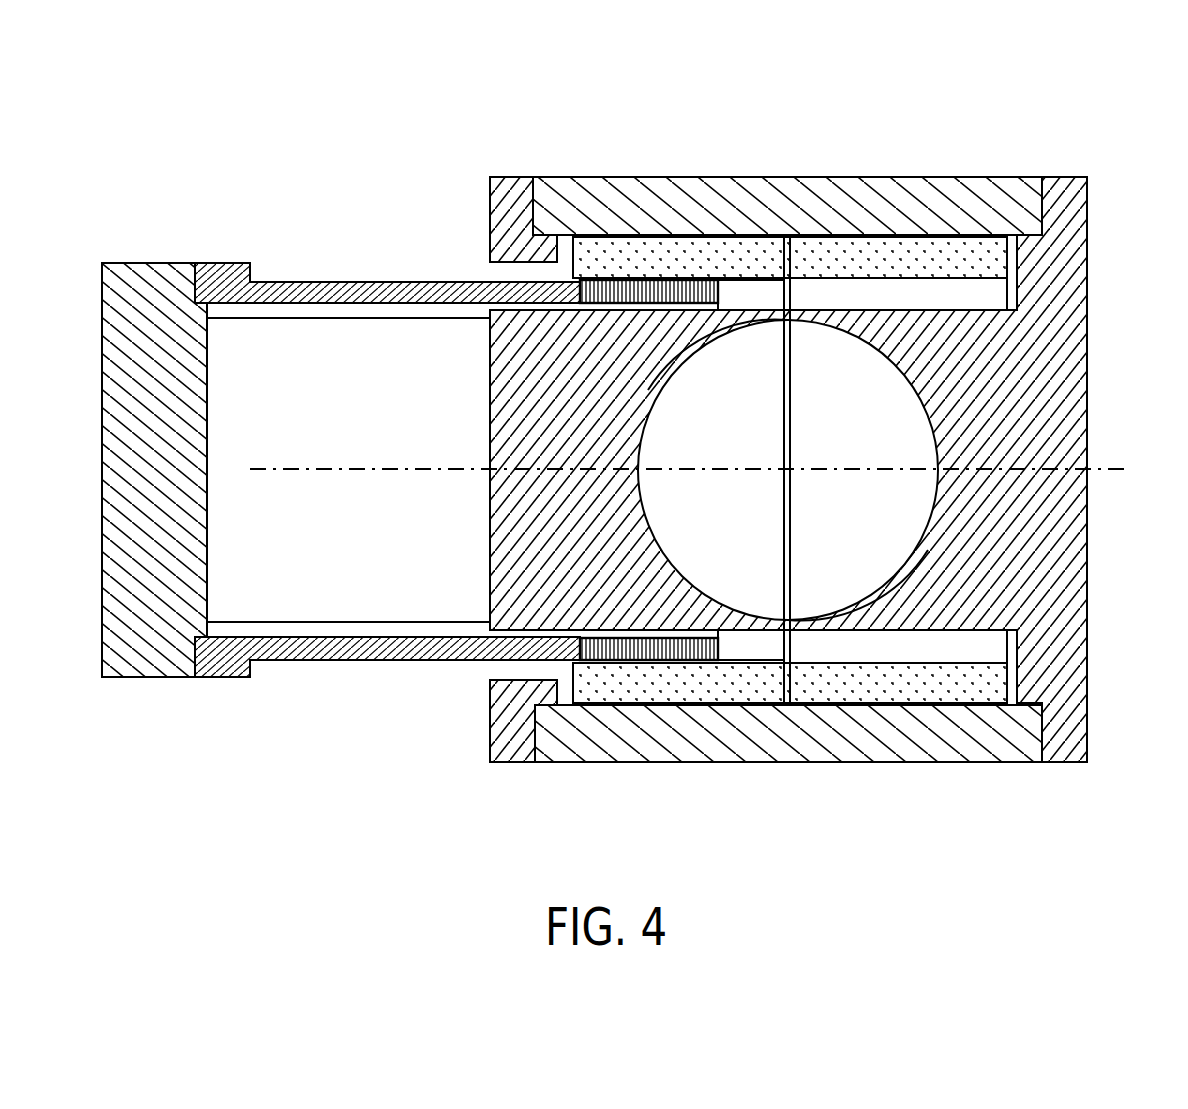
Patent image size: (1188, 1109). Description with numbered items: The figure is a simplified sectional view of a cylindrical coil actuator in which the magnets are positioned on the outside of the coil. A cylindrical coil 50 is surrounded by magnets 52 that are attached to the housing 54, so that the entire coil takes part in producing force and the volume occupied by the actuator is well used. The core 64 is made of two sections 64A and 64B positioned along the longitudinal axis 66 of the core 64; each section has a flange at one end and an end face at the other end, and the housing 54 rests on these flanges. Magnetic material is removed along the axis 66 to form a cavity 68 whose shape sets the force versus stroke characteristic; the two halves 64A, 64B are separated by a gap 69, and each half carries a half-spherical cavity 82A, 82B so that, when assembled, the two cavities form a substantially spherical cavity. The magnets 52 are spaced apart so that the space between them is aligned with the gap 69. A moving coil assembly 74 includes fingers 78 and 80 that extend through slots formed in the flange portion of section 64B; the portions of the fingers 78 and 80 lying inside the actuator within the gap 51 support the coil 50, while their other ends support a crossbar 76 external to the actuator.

The cylindrical coil 50 is at (605, 285).
The gap 51 is at (751, 295).
The magnets 52 is at (641, 255).
The housing 54 is at (848, 215).
The core 64 is at (1060, 361).
The core section 64A is at (1087, 577).
The core section 64B is at (488, 527).
The longitudinal axis 66 is at (392, 467).
The cavity 68 is at (836, 440).
The gap 69 is at (793, 480).
The moving coil assembly 74 is at (341, 480).
The crossbar 76 is at (207, 362).
The finger 78 is at (392, 292).
The finger 80 is at (345, 648).
The half-spherical cavity 82A is at (883, 585).
The half-spherical cavity 82B is at (697, 352).